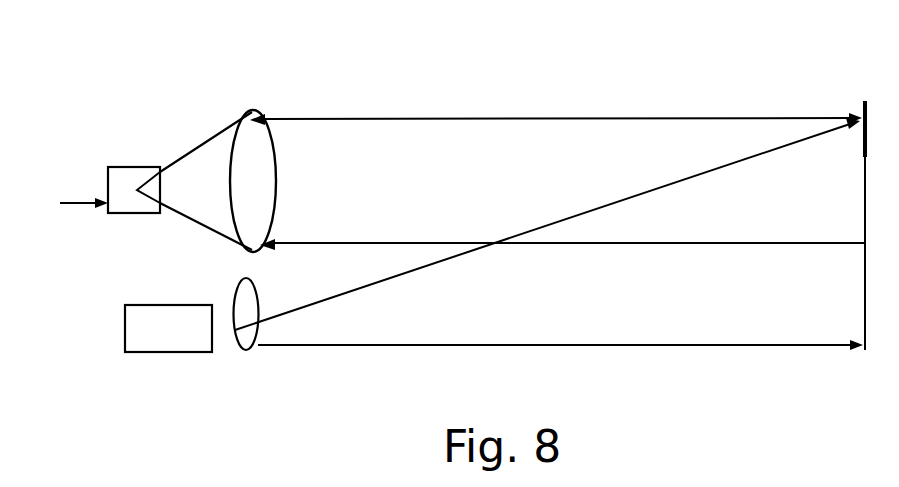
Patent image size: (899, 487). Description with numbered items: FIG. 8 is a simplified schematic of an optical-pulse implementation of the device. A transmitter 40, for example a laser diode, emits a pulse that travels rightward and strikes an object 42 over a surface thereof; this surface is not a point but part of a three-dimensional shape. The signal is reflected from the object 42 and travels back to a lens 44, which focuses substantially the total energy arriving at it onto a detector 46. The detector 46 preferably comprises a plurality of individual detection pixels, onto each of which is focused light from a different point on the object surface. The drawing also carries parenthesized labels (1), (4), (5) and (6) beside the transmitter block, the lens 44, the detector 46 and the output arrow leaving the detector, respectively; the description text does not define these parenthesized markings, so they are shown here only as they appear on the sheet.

The light source 1 is at (146, 331).
The receiving lens 4 is at (253, 162).
The detector 5 is at (128, 168).
The output signal 6 is at (66, 203).
The transmitter 40 is at (243, 357).
The object 42 is at (866, 161).
The lens 44 is at (287, 141).
The detector 46 is at (174, 161).